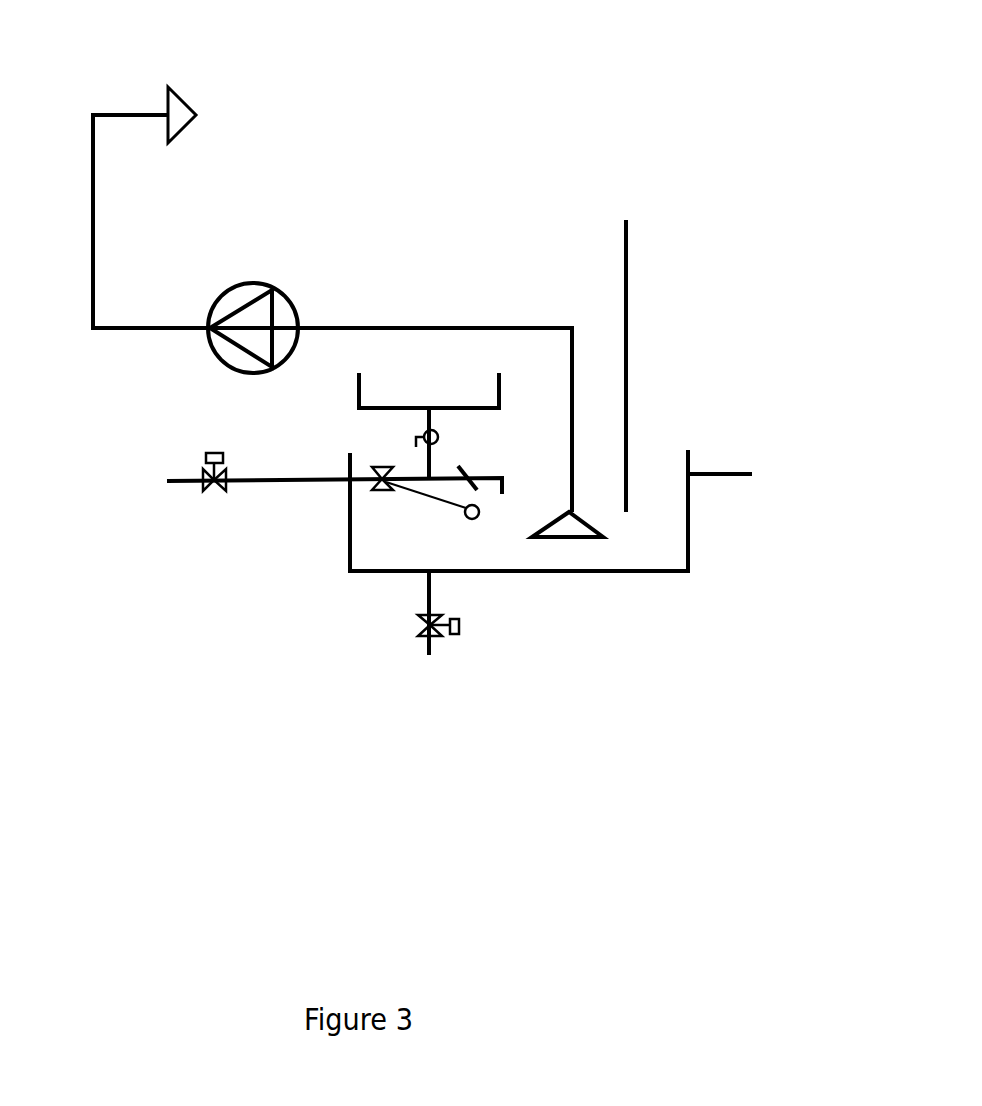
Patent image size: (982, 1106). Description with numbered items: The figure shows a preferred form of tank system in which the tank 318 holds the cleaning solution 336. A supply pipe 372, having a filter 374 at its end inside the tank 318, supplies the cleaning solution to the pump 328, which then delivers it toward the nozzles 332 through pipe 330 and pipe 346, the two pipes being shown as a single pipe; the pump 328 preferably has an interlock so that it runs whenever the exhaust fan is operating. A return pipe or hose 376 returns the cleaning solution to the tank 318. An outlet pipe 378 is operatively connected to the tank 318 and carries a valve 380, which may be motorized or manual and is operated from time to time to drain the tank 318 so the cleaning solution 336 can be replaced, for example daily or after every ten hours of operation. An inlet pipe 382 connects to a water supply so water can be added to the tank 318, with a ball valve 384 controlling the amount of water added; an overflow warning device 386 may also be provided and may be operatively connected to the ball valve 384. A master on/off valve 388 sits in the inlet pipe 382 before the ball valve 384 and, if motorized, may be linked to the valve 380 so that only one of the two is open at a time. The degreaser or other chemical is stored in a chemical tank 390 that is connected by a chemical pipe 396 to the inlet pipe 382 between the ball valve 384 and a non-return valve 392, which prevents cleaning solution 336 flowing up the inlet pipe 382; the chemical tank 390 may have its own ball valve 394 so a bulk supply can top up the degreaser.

The tank 318 is at (693, 455).
The pump 328 is at (273, 290).
The pipe 330 is at (91, 295).
The nozzle 332 is at (182, 92).
The cleaning solution 336 is at (478, 586).
The pipe 346 is at (117, 321).
The supply pipe 372 is at (445, 326).
The filter 374 is at (671, 564).
The return pipe or hose 376 is at (628, 297).
The outlet pipe 378 is at (381, 645).
The valve 380 is at (462, 635).
The inlet pipe 382 is at (160, 481).
The ball valve 384 is at (334, 593).
The overflow warning device 386 is at (748, 500).
The master on/off valve 388 is at (203, 492).
The chemical tank 390 is at (508, 385).
The non-return valve 392 is at (634, 435).
The ball valve 394 is at (230, 419).
The chemical pipe 396 is at (619, 413).